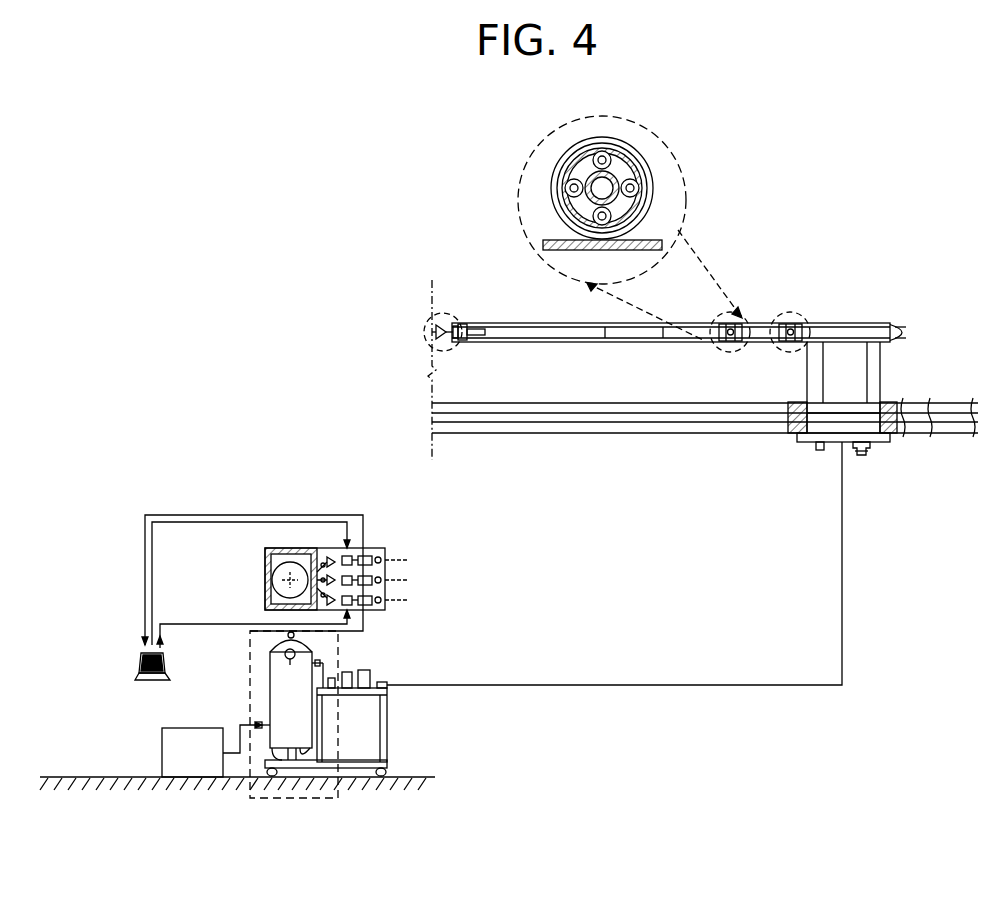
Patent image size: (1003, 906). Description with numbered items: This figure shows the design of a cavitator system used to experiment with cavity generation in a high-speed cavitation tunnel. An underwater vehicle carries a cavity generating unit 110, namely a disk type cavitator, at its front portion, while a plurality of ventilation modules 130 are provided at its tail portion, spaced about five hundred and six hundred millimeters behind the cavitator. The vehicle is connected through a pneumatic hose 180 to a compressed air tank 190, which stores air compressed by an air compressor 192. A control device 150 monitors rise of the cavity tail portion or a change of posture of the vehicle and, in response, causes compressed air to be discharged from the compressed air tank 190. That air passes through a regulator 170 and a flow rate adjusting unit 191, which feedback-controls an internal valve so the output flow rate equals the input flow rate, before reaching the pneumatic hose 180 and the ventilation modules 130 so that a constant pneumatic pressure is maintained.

The cavity generating unit 110 is at (424, 329).
The ventilation modules 130 is at (747, 320).
The control device 150 is at (140, 663).
The regulator 170 is at (305, 548).
The pneumatic hose 180 is at (843, 563).
The compressed air tank 190 is at (293, 800).
The flow rate adjusting unit 191 is at (358, 762).
The air compressor 192 is at (193, 778).